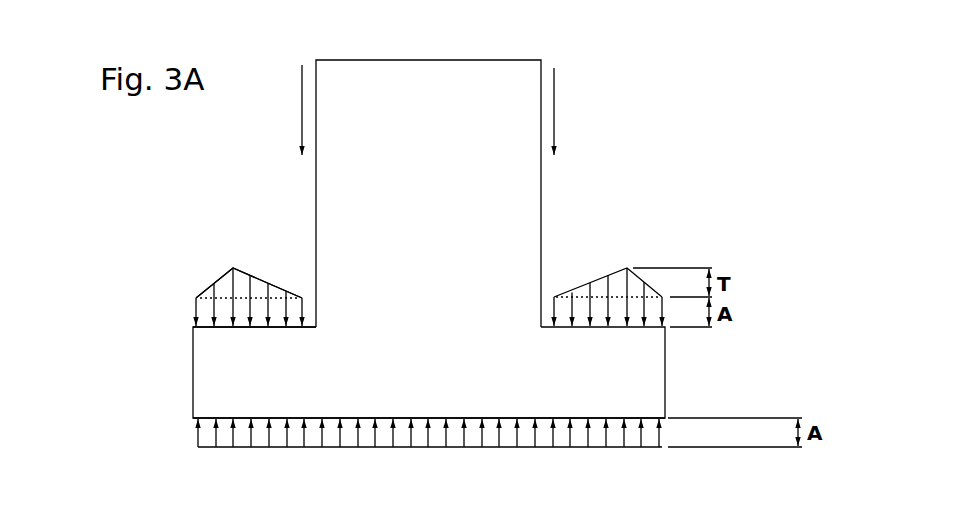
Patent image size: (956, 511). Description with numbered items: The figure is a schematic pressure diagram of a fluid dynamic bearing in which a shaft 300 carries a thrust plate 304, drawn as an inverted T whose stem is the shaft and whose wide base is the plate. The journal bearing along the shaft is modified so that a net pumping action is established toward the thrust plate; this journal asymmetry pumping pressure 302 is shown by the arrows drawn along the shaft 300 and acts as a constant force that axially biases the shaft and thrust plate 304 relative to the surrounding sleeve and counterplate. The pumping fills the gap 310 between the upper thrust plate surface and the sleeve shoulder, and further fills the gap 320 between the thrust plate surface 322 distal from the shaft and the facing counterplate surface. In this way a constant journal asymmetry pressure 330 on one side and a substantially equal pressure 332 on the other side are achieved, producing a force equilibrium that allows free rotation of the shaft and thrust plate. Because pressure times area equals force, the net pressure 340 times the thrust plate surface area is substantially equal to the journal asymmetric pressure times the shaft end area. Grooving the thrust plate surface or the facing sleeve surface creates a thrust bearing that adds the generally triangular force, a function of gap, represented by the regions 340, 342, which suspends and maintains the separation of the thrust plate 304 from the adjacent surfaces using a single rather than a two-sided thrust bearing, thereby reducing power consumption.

The shaft 300 is at (416, 60).
The journal asymmetry pumping pressure 302 is at (554, 100).
The thrust plate 304 is at (192, 372).
The gap 310 is at (182, 316).
The gap 320 is at (663, 437).
The thrust plate surface 322 is at (667, 405).
The journal asymmetry pressure 330 is at (196, 440).
The journal asymmetry pressure 332 is at (196, 298).
The net pressure region 340 is at (632, 285).
The pressure diagram region 342 is at (226, 285).